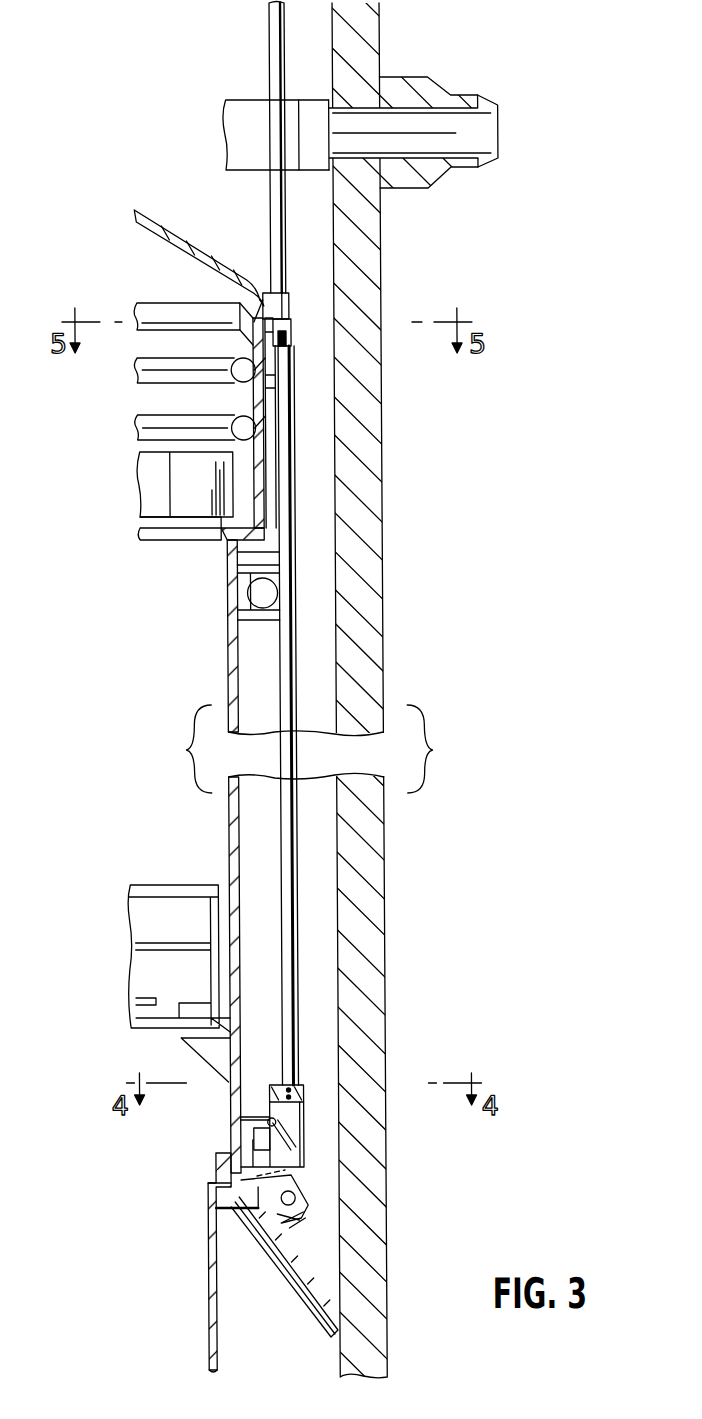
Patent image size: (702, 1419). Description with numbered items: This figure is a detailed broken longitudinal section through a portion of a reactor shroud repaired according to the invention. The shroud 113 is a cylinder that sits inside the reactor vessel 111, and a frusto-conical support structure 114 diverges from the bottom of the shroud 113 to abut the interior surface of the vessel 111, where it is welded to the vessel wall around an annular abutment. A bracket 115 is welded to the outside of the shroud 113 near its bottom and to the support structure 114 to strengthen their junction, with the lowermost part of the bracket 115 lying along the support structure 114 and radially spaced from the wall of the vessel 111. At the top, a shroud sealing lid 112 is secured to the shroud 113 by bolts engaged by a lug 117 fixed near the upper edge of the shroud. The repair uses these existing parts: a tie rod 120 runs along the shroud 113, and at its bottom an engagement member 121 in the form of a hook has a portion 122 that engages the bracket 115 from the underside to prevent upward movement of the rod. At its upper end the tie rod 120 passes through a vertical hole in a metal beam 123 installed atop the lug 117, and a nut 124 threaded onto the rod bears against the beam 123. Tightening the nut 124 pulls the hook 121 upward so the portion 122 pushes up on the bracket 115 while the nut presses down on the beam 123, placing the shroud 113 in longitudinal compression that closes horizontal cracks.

The reactor vessel 111 is at (372, 922).
The shroud sealing lid 112 is at (149, 215).
The shroud 113 is at (228, 822).
The frusto-conical support structure 114 is at (300, 1280).
The bracket 115 is at (240, 1138).
The lug 117 is at (268, 303).
The tie rod 120 is at (282, 648).
The engagement member 121 is at (300, 1115).
The portion of engagement member 122 is at (300, 1214).
The beam 123 is at (285, 327).
The nut 124 is at (289, 342).